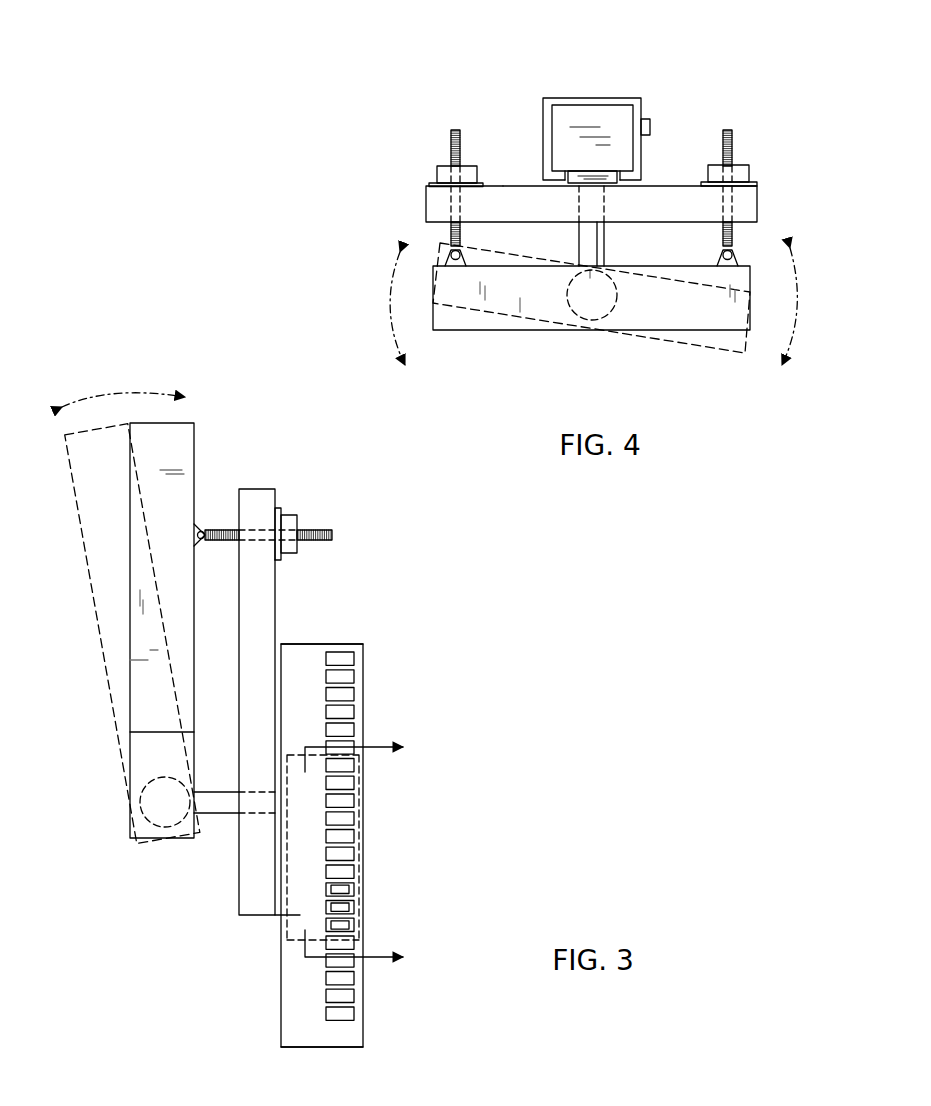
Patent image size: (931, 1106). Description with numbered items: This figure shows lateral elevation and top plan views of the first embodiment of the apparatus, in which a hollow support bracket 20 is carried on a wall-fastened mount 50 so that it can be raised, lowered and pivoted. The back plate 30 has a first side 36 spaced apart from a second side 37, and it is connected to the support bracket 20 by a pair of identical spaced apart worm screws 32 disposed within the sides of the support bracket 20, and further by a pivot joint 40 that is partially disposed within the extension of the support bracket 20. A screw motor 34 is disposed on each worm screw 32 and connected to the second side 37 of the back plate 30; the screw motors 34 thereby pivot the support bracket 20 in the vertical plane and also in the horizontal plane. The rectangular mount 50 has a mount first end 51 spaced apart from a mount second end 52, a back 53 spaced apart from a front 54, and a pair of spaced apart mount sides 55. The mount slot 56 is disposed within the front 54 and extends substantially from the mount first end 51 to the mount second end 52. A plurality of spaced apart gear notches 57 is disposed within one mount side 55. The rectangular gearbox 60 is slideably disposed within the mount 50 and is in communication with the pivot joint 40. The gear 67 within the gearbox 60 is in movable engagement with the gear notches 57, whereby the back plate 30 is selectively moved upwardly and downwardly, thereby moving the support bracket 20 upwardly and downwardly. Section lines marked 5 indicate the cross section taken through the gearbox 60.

In FIG. 3, the section line 5- 5 is at (364, 855).
In FIG. 4, the support bracket 20 is at (482, 330).
In FIG. 3, the support bracket 20 is at (185, 433).
In FIG. 4, the back plate 30 is at (425, 200).
In FIG. 3, the back plate 30 is at (264, 490).
In FIG. 4, the worm screws 32 is at (452, 140).
In FIG. 3, the worm screws 32 is at (312, 530).
In FIG. 4, the screw motors 34 is at (437, 172).
In FIG. 3, the screw motors 34 is at (300, 545).
In FIG. 4, the first side 36 is at (455, 250).
In FIG. 3, the first side 36 is at (238, 572).
In FIG. 4, the second side 37 is at (503, 186).
In FIG. 3, the second side 37 is at (278, 575).
In FIG. 4, the pivot joint 40 is at (620, 307).
In FIG. 3, the pivot joint 40 is at (172, 832).
In FIG. 4, the mount 50 is at (593, 137).
In FIG. 3, the mount 50 is at (320, 833).
In FIG. 3, the mount first end 51 is at (326, 1048).
In FIG. 3, the mount second end 52 is at (310, 643).
In FIG. 4, the back 53 is at (612, 98).
In FIG. 4, the front 54 is at (558, 187).
In FIG. 4, the mount sides 55 is at (543, 118).
In FIG. 3, the mount sides 55 is at (297, 1015).
In FIG. 4, the mount slot 56 is at (620, 188).
In FIG. 3, the gear notches 57 is at (352, 660).
In FIG. 4, the gearbox 60 is at (628, 120).
In FIG. 3, the gearbox 60 is at (282, 918).
In FIG. 4, the gear 67 is at (650, 127).
In FIG. 3, the gear 67 is at (343, 905).